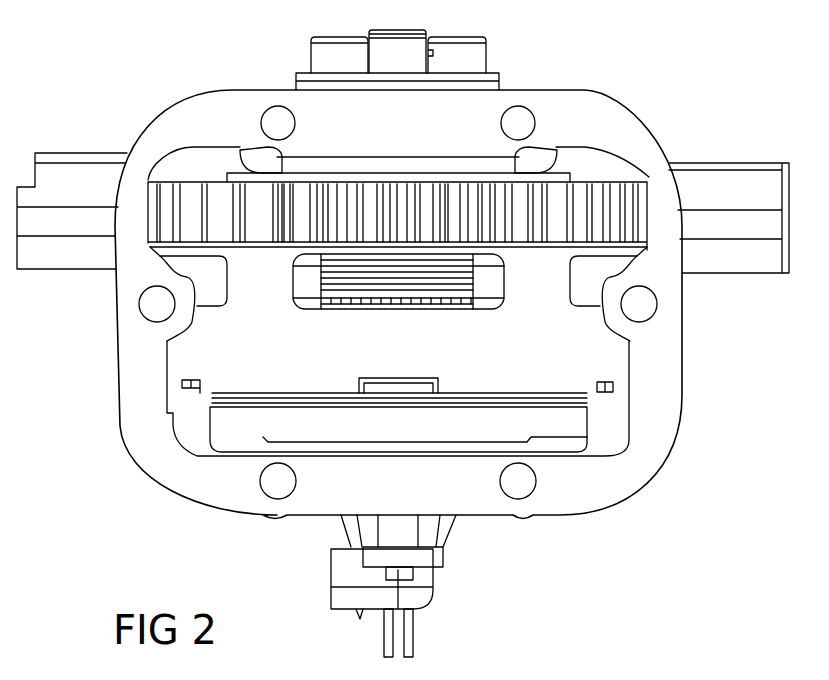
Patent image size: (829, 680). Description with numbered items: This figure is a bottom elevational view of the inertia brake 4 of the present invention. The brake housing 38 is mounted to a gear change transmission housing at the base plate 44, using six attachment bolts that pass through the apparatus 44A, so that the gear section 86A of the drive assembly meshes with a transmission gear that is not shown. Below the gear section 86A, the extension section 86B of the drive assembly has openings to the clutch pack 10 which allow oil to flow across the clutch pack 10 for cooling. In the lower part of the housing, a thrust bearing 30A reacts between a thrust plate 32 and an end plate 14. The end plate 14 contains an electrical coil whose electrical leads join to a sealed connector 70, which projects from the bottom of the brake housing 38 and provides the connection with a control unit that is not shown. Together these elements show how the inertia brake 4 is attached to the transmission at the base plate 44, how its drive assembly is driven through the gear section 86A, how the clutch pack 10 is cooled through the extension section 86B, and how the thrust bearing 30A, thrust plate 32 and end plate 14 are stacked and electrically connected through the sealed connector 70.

The inertia brake 4 is at (655, 510).
The clutch pack 10 is at (298, 280).
The end plate 14 is at (574, 428).
The thrust bearing 30A is at (190, 402).
The thrust plate 32 is at (576, 394).
The brake housing 38 is at (608, 118).
The base plate 44 is at (167, 113).
The attachment bolt apparatus 44A is at (268, 120).
The sealed connector 70 is at (422, 596).
The gear section 86A is at (619, 202).
The extension section 86B is at (579, 343).